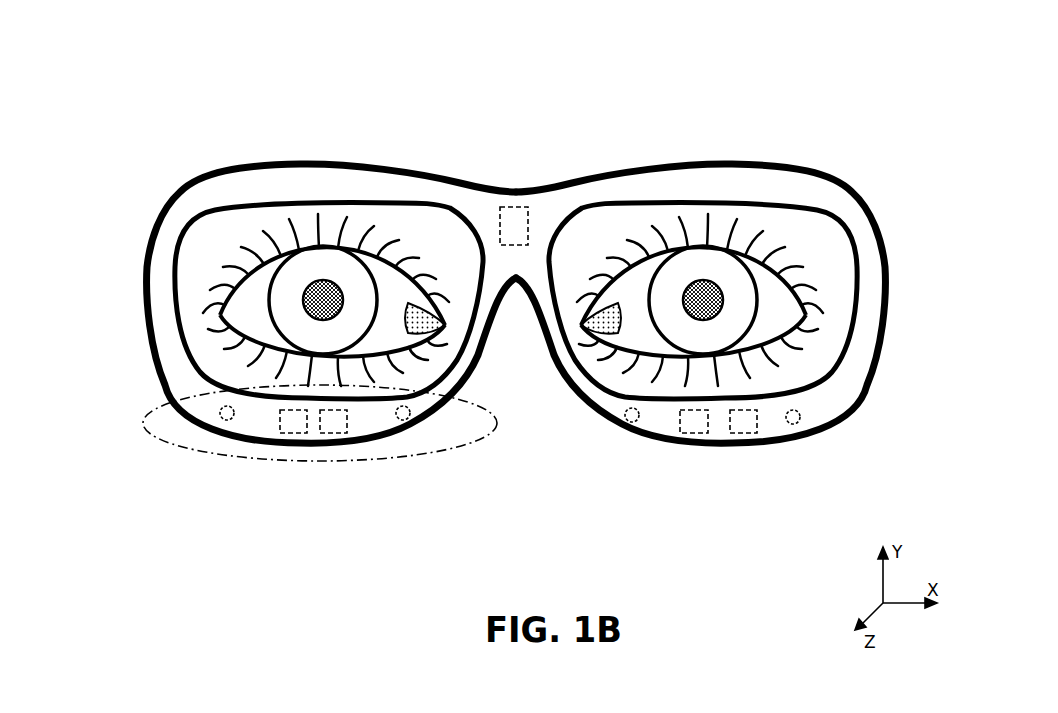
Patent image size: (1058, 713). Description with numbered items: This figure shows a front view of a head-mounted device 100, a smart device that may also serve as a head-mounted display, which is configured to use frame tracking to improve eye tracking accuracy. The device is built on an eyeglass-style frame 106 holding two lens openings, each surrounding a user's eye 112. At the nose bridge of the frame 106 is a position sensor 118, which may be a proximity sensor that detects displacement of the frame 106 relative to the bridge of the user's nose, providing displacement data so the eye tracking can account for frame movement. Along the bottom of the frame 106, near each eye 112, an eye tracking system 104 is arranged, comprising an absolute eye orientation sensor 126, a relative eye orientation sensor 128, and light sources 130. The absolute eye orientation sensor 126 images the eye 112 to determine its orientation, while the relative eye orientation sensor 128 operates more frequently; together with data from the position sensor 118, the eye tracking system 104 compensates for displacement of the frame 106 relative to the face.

The head-mounted device 100 is at (516, 248).
The eye tracking system 104 is at (212, 454).
The frame 106 is at (516, 271).
The eye 112 is at (257, 328).
The position sensor 118 is at (514, 223).
The absolute eye orientation sensor 126 is at (294, 424).
The relative eye orientation sensor 128 is at (334, 426).
The light source 130 is at (221, 410).